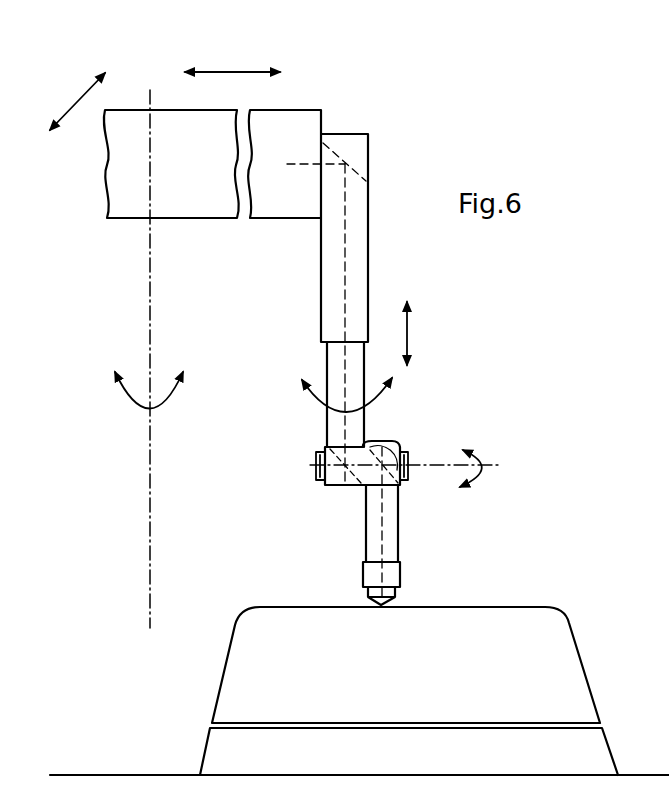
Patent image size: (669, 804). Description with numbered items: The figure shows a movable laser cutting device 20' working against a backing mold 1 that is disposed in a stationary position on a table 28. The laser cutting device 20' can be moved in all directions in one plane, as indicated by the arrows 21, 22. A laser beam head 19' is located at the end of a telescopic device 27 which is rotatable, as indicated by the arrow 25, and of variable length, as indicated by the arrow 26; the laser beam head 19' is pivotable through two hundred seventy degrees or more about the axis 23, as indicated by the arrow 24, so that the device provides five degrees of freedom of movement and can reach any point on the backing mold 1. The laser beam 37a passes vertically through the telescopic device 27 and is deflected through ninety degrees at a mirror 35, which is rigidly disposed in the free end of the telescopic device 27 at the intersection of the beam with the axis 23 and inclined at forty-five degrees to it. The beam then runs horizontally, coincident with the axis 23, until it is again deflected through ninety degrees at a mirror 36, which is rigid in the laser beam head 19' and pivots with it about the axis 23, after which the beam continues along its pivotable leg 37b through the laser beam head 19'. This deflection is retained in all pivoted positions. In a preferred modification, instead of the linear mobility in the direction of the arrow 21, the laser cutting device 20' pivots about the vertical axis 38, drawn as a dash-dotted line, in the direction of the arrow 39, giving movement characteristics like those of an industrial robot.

The backing mold 1 is at (581, 644).
The laser beam head 19' is at (407, 571).
The laser cutting device 20' is at (212, 186).
The arrow 21 is at (78, 100).
The arrow 22 is at (222, 72).
The axis 23 is at (428, 465).
The arrow 24 is at (488, 477).
The arrow 25 is at (392, 400).
The arrow 26 is at (407, 333).
The telescopic device 27 is at (372, 263).
The table 28 is at (137, 775).
The mirror 35 is at (342, 485).
The mirror 36 is at (386, 447).
The laser beam 37a is at (345, 252).
The laser beam 37b is at (384, 538).
The vertical axis 38 is at (150, 325).
The arrow 39 is at (178, 405).